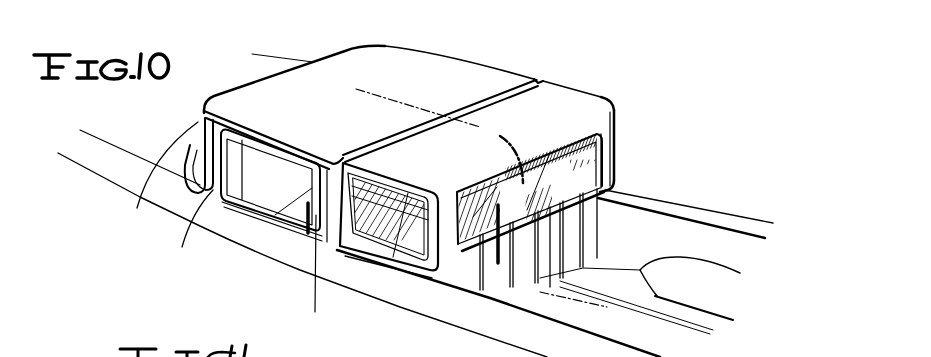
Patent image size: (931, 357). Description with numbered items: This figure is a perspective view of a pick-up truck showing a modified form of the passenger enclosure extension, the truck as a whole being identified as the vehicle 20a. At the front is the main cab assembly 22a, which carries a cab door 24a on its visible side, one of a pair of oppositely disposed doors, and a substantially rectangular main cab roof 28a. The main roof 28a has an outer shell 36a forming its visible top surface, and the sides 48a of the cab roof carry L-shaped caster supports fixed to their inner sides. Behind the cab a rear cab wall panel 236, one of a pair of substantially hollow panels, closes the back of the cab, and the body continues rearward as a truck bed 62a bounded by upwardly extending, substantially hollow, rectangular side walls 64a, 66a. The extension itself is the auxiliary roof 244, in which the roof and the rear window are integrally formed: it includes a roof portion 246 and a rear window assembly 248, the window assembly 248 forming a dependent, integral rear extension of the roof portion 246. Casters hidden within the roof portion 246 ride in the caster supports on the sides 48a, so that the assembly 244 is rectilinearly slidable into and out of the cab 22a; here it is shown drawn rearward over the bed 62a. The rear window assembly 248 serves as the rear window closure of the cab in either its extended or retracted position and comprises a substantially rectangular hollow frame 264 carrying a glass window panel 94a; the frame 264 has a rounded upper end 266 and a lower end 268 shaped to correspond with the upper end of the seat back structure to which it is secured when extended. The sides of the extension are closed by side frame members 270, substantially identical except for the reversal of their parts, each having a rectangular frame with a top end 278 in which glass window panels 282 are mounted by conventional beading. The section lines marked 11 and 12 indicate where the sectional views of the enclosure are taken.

The section line 11- 11 is at (356, 89).
The window glass panel 12 is at (362, 207).
The vehicle 20a is at (474, 61).
The main cab assembly 22a is at (388, 48).
The cab door 24a is at (248, 232).
The main cab roof 28a is at (270, 97).
The outer shell 36a is at (503, 84).
The sides of the cab roof 48a is at (290, 135).
The truck bed 62a is at (682, 308).
The side wall 64a is at (482, 333).
The side wall 66a is at (650, 227).
The glass window panel 94a is at (612, 127).
The rear cab wall panel 236 is at (333, 222).
The auxiliary roof 244 is at (599, 96).
The roof portion 246 is at (560, 103).
The rear window assembly 248 is at (613, 157).
The hollow frame 264 is at (615, 138).
The rounded upper end 266 is at (603, 109).
The lower end 268 is at (621, 187).
The side frame member 270 is at (373, 259).
The top end 278 is at (423, 190).
The glass window panel 282 is at (410, 263).